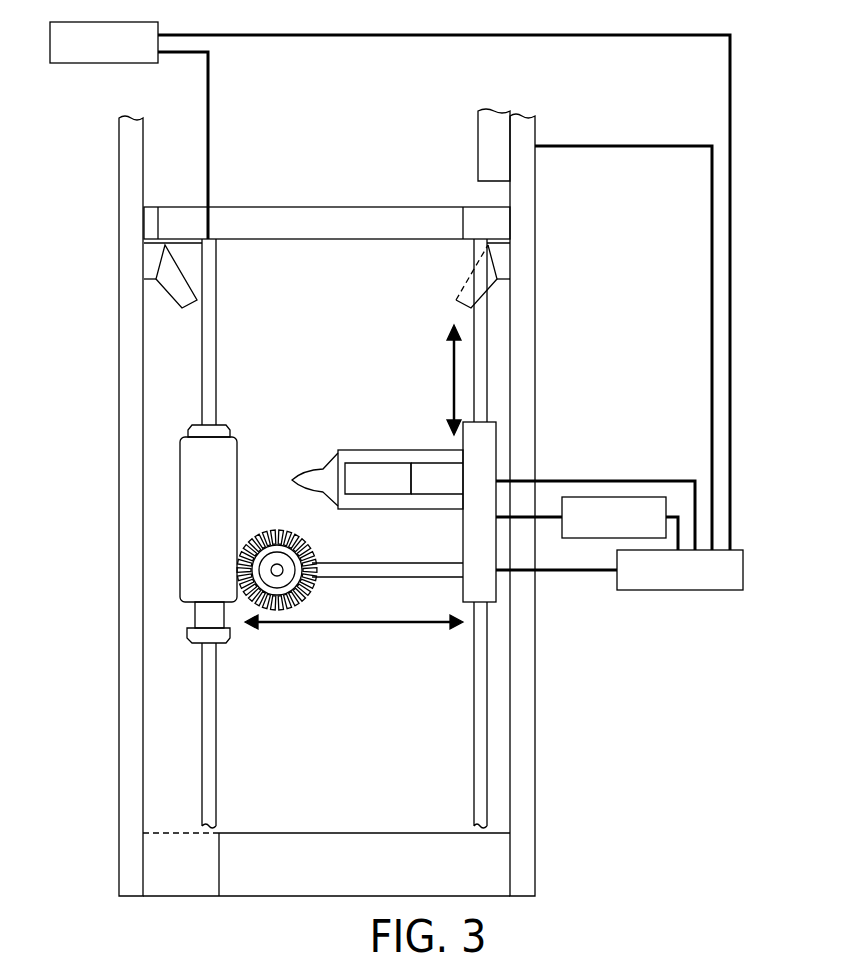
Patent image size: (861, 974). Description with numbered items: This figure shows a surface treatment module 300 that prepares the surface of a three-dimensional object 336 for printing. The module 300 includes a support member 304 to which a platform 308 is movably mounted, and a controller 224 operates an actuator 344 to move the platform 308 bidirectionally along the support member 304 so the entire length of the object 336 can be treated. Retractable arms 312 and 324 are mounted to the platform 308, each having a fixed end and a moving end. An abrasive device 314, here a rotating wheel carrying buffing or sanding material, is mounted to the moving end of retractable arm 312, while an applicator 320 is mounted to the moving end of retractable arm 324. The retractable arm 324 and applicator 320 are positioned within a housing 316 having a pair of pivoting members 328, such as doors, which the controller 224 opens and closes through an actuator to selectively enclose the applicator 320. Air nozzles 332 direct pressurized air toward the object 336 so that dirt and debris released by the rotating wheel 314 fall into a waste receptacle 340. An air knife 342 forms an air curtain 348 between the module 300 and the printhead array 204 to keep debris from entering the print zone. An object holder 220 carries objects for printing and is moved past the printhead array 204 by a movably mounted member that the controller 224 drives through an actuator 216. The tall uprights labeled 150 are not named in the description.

The support posts 150 is at (119, 407).
The printhead array 204 is at (478, 141).
The actuator 216 is at (105, 63).
The object holder 220 is at (216, 328).
The controller 224 is at (682, 590).
The surface treatment module 300 is at (538, 492).
The support member 304 is at (487, 368).
The platform 308 is at (496, 587).
The retractable arm 312 is at (392, 577).
The abrasive device 314 is at (307, 592).
The housing 316 is at (405, 450).
The applicator 320 is at (378, 488).
The retractable arm 324 is at (435, 488).
The pivoting members 328 is at (292, 480).
The air nozzles 332 is at (183, 272).
The object 336 is at (232, 452).
The waste receptacle 340 is at (328, 833).
The air knife 342 is at (490, 222).
The actuator 344 is at (613, 495).
The air curtain 348 is at (333, 207).